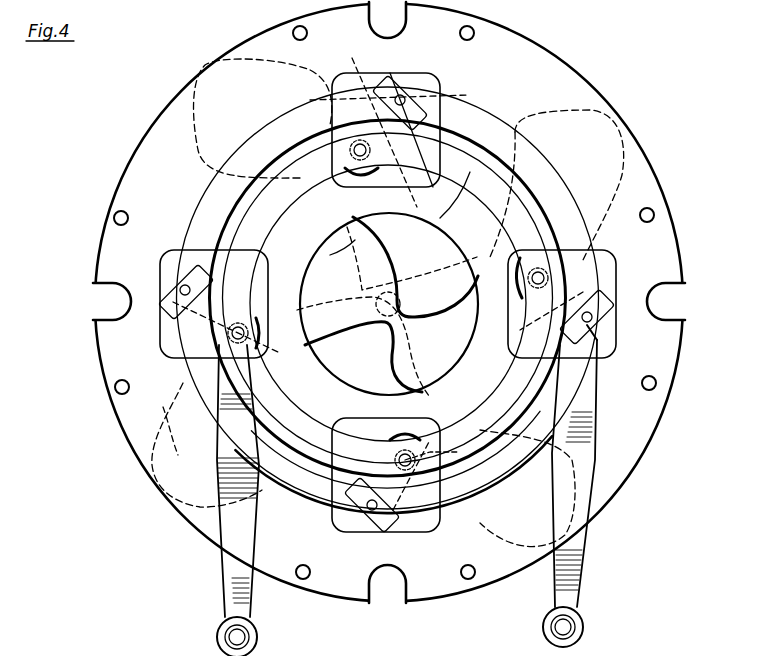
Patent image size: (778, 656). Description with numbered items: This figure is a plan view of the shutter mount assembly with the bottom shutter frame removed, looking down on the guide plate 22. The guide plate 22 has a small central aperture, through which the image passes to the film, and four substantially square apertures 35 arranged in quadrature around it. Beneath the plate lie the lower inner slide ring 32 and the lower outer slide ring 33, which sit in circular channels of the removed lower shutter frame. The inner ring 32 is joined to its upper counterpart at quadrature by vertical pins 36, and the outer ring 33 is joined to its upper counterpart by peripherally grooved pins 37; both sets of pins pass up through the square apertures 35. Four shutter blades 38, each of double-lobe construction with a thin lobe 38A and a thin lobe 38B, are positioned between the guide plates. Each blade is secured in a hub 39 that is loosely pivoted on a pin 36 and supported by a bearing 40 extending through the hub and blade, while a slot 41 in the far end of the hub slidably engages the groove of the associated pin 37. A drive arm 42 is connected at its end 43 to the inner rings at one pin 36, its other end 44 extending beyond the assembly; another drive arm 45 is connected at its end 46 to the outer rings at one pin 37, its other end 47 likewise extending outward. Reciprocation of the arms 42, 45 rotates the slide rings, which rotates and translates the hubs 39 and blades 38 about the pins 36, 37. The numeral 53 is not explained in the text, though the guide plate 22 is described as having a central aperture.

The guide plate 22 is at (110, 380).
The inner slide ring 32 is at (208, 181).
The outer slide ring 33 is at (210, 207).
The square apertures 35 is at (413, 78).
The pins 36 is at (358, 153).
The peripherally grooved pins 37 is at (400, 95).
The shutter blades 38 is at (326, 206).
The thin lobe 38A is at (154, 424).
The thin lobe 38B is at (327, 253).
The hub 39 is at (415, 550).
The bearing 40 is at (428, 327).
The slot 41 is at (403, 107).
The drive arm 42 is at (232, 564).
The end of drive arm 43 is at (190, 363).
The other end of drive arm 44 is at (225, 622).
The drive arm 45 is at (577, 530).
The end of drive arm 46 is at (593, 367).
The other end of drive arm 47 is at (580, 609).
The follower 53 is at (410, 257).